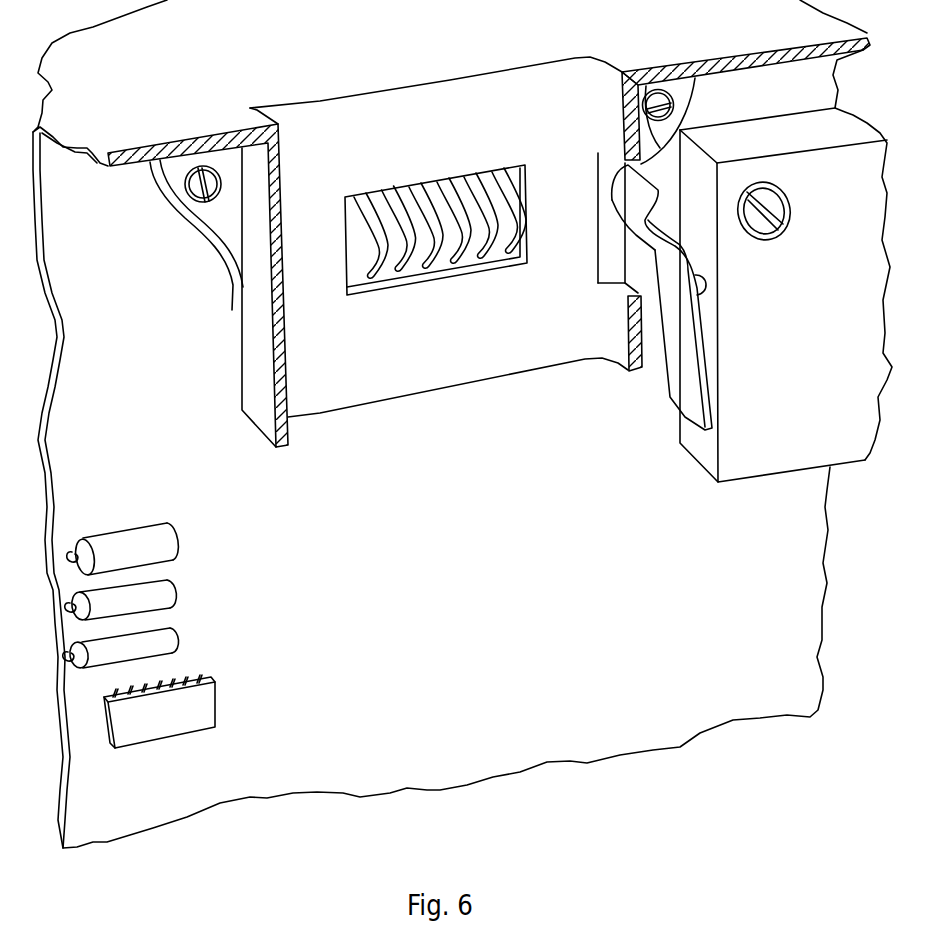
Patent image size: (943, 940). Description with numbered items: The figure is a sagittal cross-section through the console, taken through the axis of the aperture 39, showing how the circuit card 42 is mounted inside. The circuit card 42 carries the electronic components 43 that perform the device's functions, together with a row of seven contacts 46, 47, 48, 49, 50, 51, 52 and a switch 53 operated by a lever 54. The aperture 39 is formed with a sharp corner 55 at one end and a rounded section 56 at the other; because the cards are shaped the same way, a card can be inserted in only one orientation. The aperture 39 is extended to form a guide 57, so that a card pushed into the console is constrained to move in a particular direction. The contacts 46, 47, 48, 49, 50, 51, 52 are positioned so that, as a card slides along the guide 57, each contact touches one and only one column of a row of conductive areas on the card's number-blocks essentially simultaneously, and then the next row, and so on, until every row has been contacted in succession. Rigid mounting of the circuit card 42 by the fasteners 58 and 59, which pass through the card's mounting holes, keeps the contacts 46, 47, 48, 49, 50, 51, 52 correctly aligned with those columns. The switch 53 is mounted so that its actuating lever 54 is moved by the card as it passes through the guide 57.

The aperture 39 is at (502, 86).
The circuit card 42 is at (778, 568).
The electronic components 43 is at (167, 543).
The contact 46 is at (358, 223).
The contact 47 is at (378, 207).
The contact 48 is at (400, 205).
The contact 49 is at (432, 201).
The contact 50 is at (462, 198).
The contact 51 is at (482, 190).
The contact 52 is at (507, 180).
The switch 53 is at (753, 460).
The lever 54 is at (627, 205).
The sharp corner 55 is at (252, 109).
The rounded section 56 is at (601, 60).
The guide 57 is at (500, 333).
The fastener 58 is at (198, 165).
The fastener 59 is at (663, 97).